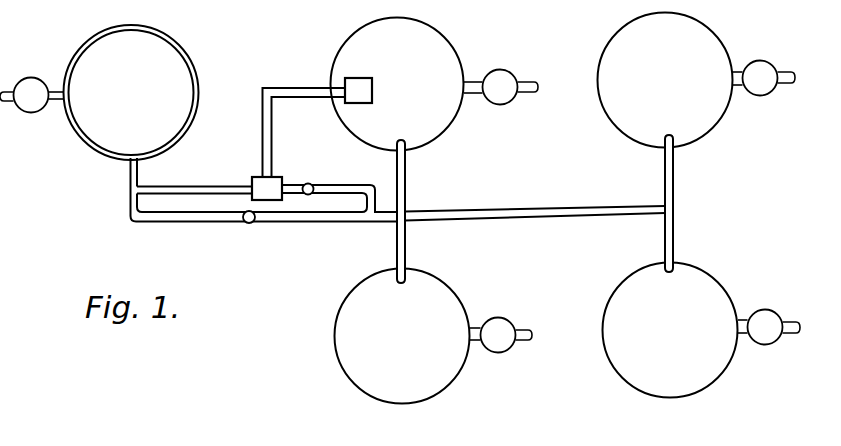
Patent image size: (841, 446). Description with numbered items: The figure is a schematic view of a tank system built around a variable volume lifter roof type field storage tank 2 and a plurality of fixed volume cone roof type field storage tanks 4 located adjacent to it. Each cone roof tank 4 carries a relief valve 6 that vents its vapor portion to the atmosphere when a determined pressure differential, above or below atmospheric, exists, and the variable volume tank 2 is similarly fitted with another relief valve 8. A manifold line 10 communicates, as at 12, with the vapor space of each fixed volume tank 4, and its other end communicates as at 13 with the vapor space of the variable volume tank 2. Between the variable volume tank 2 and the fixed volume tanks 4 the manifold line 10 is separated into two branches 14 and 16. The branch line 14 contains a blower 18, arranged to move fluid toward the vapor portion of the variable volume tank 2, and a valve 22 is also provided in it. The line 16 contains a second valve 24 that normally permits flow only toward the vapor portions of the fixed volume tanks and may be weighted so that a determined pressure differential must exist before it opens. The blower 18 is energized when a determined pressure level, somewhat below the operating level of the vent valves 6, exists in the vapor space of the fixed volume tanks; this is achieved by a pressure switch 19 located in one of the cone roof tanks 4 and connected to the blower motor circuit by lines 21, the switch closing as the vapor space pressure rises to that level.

The variable volume lifter roof type field storage tank 2 is at (182, 48).
The fixed volume cone roof type field storage tank 4 is at (402, 91).
The relief valve 6 is at (503, 107).
The relief valve 8 is at (31, 117).
The manifold line 10 is at (580, 207).
The communication with vapor space of cone roof tank 12 is at (405, 175).
The communication with vapor space of variable volume tank 13 is at (128, 184).
The branch line 14 is at (235, 185).
The line 16 is at (227, 223).
The blower 18 is at (281, 177).
The pressure switch 19 is at (363, 78).
The lines 21 is at (262, 124).
The valve 22 is at (313, 184).
The second valve 24 is at (254, 222).